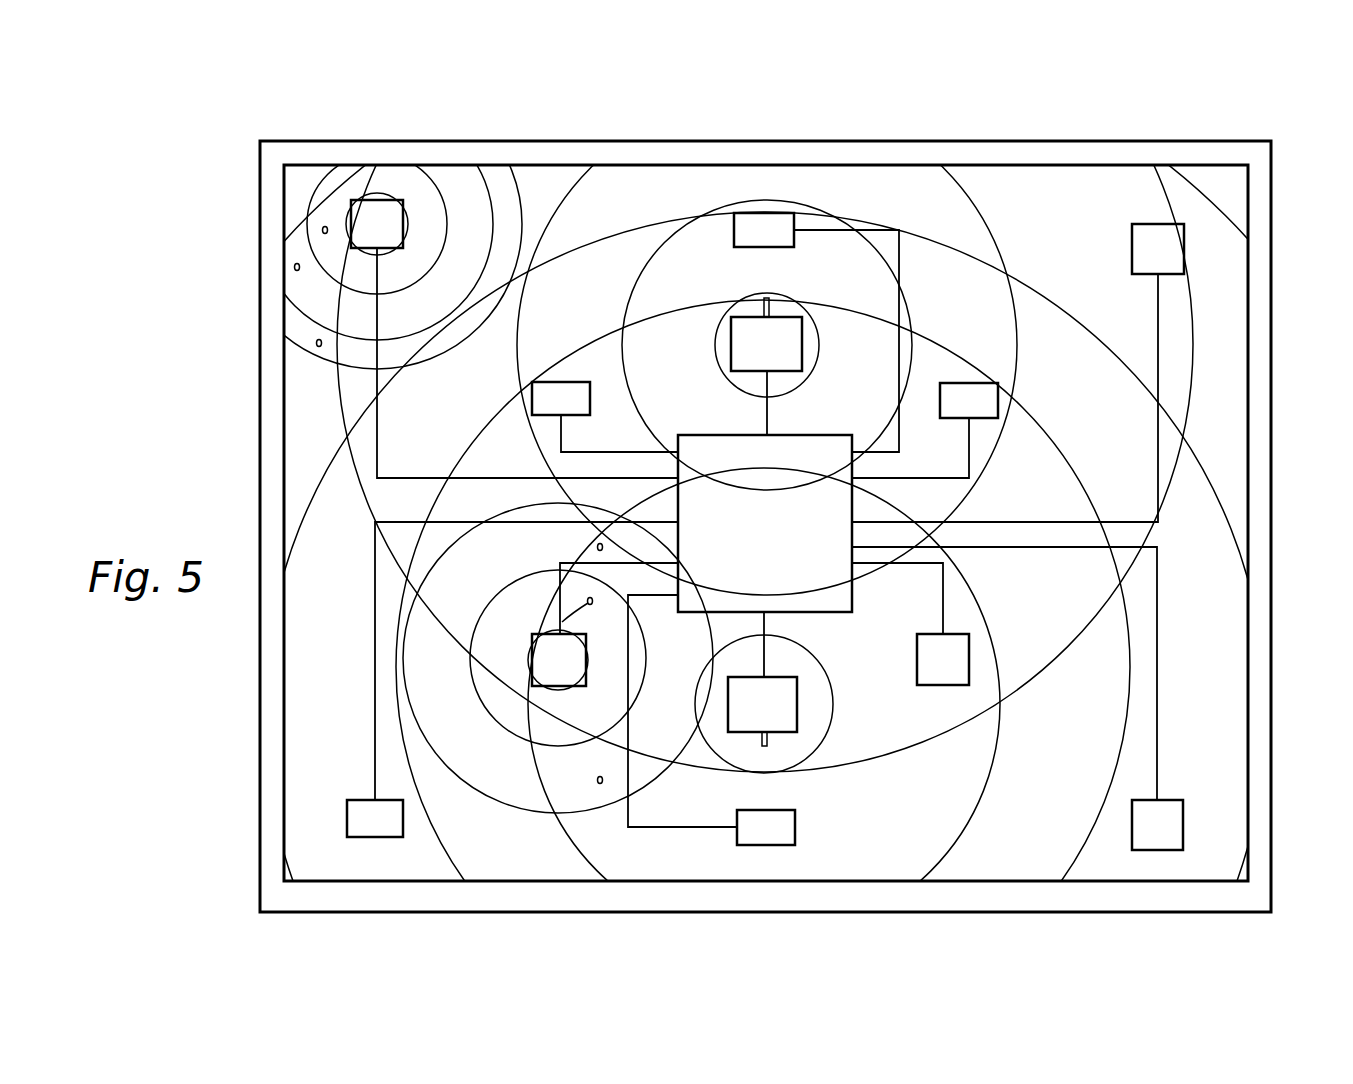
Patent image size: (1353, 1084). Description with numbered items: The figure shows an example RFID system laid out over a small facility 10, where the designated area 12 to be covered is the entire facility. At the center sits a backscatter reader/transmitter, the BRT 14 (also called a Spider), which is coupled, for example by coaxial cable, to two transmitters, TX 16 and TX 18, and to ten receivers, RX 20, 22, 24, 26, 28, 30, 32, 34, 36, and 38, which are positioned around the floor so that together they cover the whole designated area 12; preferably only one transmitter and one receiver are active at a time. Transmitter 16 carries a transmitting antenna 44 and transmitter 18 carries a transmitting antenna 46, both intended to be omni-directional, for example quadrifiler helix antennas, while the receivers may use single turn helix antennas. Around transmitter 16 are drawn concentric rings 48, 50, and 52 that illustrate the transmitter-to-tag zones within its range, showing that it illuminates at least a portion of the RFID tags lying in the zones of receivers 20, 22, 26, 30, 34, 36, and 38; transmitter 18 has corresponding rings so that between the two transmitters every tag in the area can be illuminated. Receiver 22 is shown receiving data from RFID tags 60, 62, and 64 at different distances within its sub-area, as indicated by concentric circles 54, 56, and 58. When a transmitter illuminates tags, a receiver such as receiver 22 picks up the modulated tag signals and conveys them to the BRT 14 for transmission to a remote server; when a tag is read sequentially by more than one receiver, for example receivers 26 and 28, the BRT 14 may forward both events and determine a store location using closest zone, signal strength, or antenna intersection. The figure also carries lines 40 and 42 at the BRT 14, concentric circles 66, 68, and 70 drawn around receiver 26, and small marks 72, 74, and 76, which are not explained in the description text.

The small facility 10 is at (940, 139).
The designated area 12 is at (1271, 305).
The backscatter reader/transmitter (BRT) 14 is at (720, 435).
The first transmitter TX 16 is at (819, 343).
The second transmitter TX 18 is at (799, 703).
The receiver RX 20 is at (570, 382).
The receiver RX 22 is at (352, 200).
The receiver RX 24 is at (347, 810).
The receiver RX 26 is at (531, 658).
The receiver RX 28 is at (795, 830).
The receiver RX 30 is at (932, 686).
The receiver RX 32 is at (1183, 818).
The receiver RX 34 is at (1132, 248).
The receiver RX 36 is at (962, 383).
The receiver RX 38 is at (765, 213).
The Tx1 connection line 40 is at (768, 412).
The Rx1 connection line 42 is at (585, 452).
The transmitting antenna 44 is at (776, 310).
The transmitting antenna 46 is at (767, 744).
The concentric ring 48 is at (733, 298).
The concentric ring 50 is at (648, 260).
The concentric ring 52 is at (568, 193).
The concentric circle 54 is at (450, 217).
The concentric circle 56 is at (398, 340).
The concentric circle 58 is at (423, 363).
The RFID tag 60 is at (322, 230).
The RFID tag 62 is at (295, 267).
The RFID tag 64 is at (319, 347).
The Rx4 inner range circle 66 is at (560, 688).
The Rx4 middle range circle 68 is at (507, 728).
The Rx4 outer range circle 70 is at (521, 508).
The intersection point 72 is at (598, 547).
The intersection point 74 is at (540, 636).
The intersection point 76 is at (598, 779).